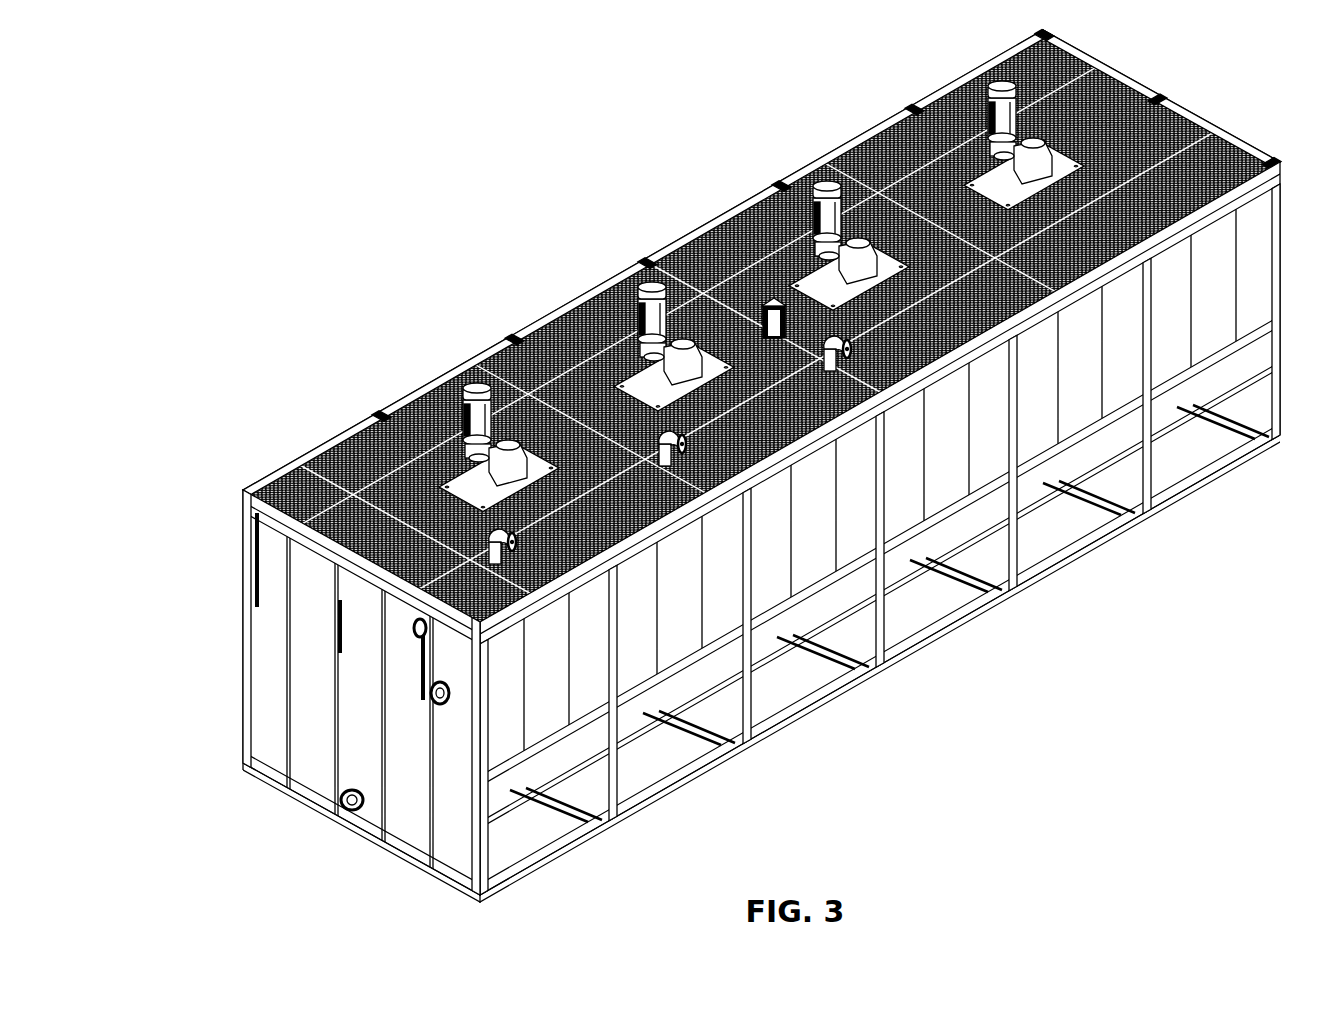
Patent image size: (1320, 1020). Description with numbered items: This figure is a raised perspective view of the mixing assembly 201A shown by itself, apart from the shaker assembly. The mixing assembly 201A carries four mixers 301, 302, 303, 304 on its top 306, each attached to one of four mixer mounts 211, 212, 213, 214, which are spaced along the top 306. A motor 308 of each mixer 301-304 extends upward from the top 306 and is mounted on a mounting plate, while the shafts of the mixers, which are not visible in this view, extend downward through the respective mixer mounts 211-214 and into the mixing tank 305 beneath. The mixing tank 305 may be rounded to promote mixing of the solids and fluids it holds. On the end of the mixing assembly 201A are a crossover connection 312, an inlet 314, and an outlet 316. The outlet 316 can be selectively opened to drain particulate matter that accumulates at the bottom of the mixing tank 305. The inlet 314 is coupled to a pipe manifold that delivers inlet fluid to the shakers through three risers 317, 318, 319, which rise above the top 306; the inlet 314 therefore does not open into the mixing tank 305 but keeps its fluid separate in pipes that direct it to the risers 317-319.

The mixing assembly 201A is at (398, 302).
The mixer mount 211 is at (445, 488).
The mixer mount 212 is at (612, 384).
The mixer mount 213 is at (788, 285).
The mixer mount 214 is at (982, 182).
The mixer 301 is at (470, 392).
The mixer 302 is at (648, 292).
The mixer 303 is at (824, 190).
The mixer 304 is at (1006, 90).
The mixing tank 305 is at (634, 696).
The top 306 is at (1160, 135).
The motor 308 is at (472, 432).
The crossover connection 312 is at (431, 697).
The inlet 314 is at (414, 630).
The outlet 316 is at (342, 804).
The riser 317 is at (520, 546).
The riser 318 is at (690, 450).
The riser 319 is at (854, 356).